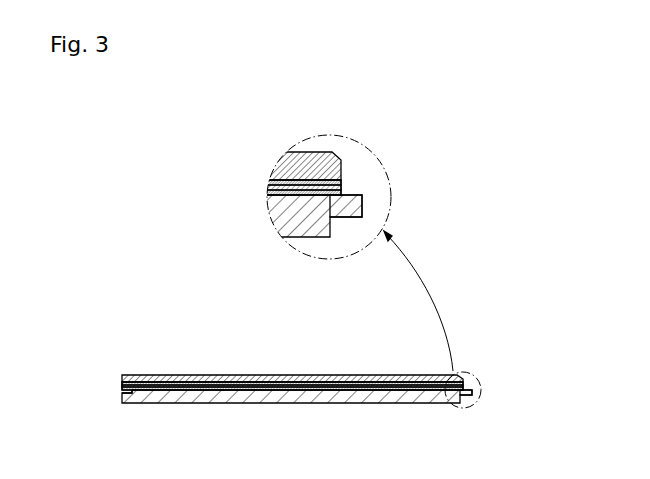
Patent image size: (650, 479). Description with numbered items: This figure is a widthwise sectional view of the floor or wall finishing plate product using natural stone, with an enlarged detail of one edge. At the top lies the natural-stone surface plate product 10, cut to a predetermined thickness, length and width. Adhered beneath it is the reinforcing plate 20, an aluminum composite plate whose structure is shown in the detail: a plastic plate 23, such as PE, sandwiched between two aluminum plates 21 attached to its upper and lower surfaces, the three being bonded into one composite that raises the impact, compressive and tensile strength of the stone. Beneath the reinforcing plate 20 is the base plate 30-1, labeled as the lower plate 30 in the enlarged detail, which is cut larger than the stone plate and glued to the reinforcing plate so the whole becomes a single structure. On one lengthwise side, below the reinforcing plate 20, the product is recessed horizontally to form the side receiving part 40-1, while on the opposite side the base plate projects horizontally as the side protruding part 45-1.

The natural-stone surface plate product 10 is at (313, 147).
The reinforcing plate 20 is at (412, 150).
The aluminum plates 21 is at (342, 183).
The plastic plate 23 is at (342, 187).
The second substrate 30 is at (310, 241).
The base plate 30-1 is at (312, 408).
The side receiving part 40-1 is at (131, 391).
The side protruding part 45-1 is at (363, 205).